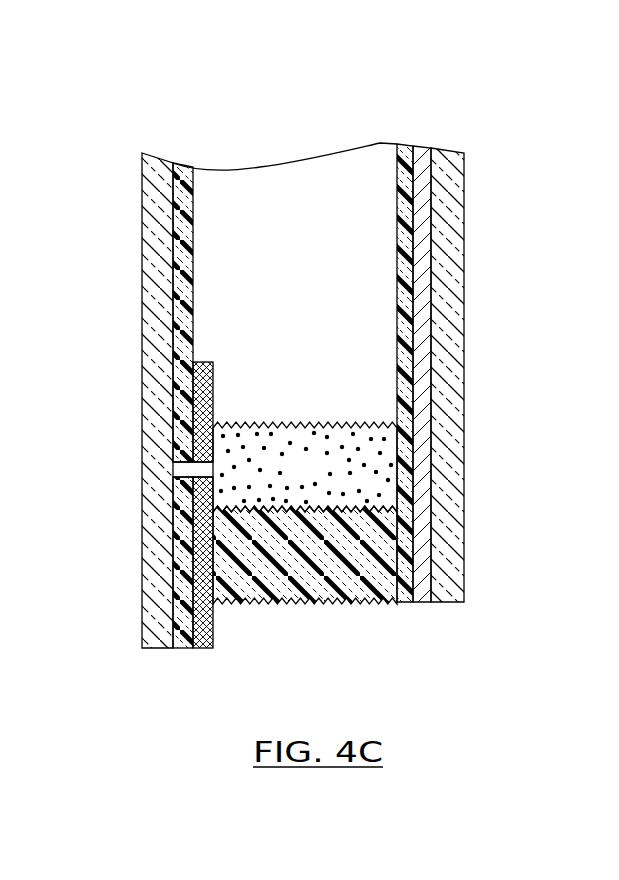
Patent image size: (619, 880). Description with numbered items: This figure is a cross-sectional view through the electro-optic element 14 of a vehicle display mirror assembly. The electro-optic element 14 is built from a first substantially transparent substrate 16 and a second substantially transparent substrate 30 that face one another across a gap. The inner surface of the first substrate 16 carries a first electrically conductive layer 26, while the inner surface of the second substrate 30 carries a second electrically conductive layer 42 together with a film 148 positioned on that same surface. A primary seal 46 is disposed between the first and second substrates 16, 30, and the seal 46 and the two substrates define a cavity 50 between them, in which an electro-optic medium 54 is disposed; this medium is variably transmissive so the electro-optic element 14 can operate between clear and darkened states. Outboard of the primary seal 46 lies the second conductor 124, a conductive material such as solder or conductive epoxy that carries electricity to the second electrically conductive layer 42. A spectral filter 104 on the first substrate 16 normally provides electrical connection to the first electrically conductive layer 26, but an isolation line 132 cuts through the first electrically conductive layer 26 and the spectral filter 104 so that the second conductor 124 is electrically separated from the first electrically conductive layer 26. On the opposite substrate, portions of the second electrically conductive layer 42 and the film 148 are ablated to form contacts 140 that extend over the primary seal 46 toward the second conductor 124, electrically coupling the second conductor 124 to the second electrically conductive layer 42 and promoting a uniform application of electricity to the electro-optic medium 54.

The electro-optic element 14 is at (182, 64).
The first substantially transparent substrate 16 is at (158, 613).
The first electrically conductive layer 26 is at (188, 648).
The second substantially transparent substrate 30 is at (448, 583).
The second electrically conductive layer 42 is at (400, 144).
The primary seal 46 is at (310, 478).
The cavity 50 is at (329, 170).
The electro-optic medium 54 is at (267, 190).
The spectral filter 104 is at (178, 395).
The second conductor 124 is at (327, 582).
The isolation line 132 is at (178, 467).
The contacts 140 is at (428, 527).
The film 148 is at (430, 148).